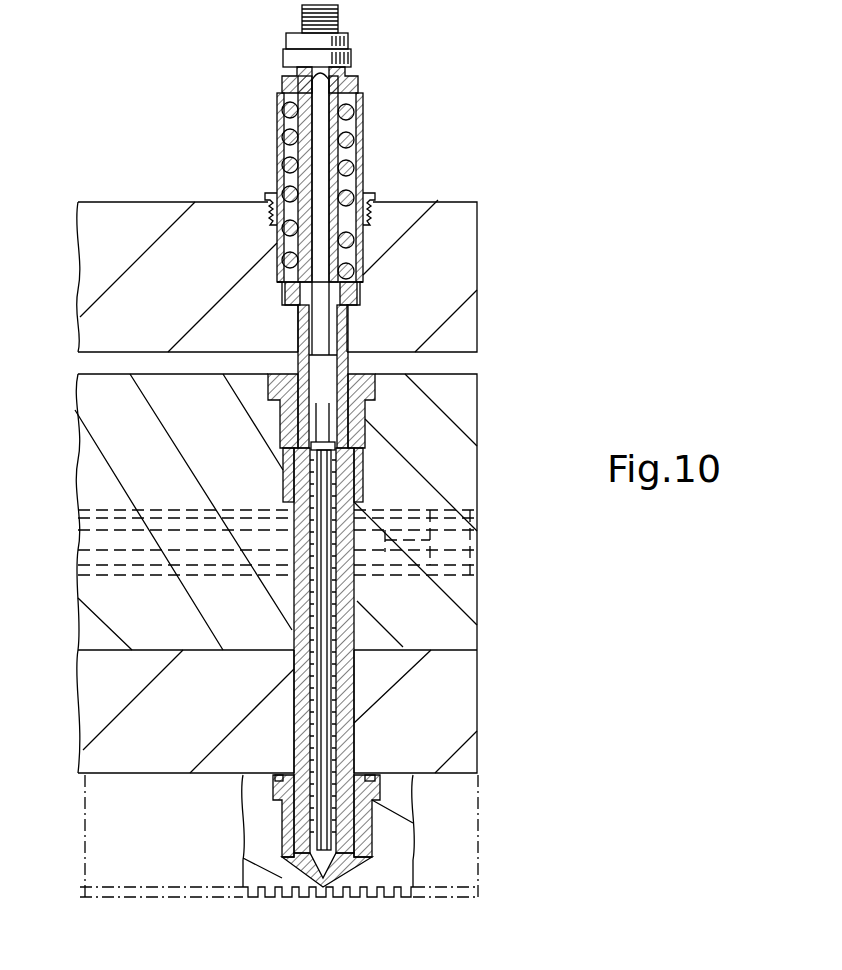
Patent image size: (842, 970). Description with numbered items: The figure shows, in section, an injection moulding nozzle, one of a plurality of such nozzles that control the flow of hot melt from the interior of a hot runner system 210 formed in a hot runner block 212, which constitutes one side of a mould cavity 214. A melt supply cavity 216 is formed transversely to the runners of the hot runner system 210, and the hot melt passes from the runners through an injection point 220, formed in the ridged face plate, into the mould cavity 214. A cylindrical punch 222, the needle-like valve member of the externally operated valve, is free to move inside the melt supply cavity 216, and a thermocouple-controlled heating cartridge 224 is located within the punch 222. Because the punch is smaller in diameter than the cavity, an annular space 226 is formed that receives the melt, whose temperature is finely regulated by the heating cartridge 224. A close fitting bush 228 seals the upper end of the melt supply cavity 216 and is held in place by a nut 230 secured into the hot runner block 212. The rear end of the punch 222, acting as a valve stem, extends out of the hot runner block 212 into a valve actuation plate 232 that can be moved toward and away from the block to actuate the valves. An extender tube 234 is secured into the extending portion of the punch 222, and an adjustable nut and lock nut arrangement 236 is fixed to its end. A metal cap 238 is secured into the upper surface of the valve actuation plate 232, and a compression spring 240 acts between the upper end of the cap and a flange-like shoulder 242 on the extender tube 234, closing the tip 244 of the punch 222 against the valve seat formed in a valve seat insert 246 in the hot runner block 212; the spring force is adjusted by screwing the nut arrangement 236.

The hot runner system 210 is at (461, 504).
The hot runner block 212 is at (478, 374).
The mould cavity 214 is at (359, 935).
The melt supply cavity 216 is at (357, 717).
The injection point 220 is at (321, 906).
The cylindrical punch 222 is at (344, 682).
The thermocouple-controlled heating cartridge 224 is at (331, 622).
The annular space 226 is at (357, 753).
The close fitting bush 228 is at (364, 463).
The nut 230 is at (358, 420).
The valve actuation plate 232 is at (478, 213).
The extender tube 234 is at (340, 172).
The adjustable nut and lock nut arrangement 236 is at (373, 47).
The metal cap 238 is at (364, 118).
The compression spring 240 is at (352, 152).
The flange-like shoulder 242 is at (360, 296).
The tip 244 is at (360, 898).
The valve seat insert 246 is at (372, 826).